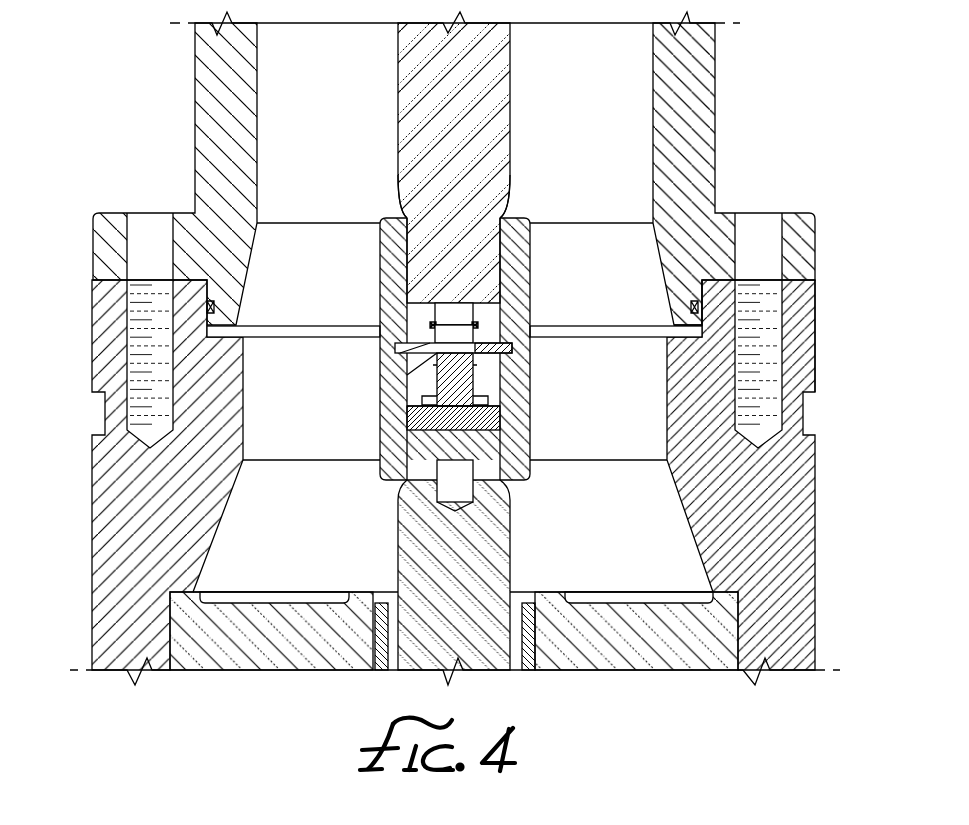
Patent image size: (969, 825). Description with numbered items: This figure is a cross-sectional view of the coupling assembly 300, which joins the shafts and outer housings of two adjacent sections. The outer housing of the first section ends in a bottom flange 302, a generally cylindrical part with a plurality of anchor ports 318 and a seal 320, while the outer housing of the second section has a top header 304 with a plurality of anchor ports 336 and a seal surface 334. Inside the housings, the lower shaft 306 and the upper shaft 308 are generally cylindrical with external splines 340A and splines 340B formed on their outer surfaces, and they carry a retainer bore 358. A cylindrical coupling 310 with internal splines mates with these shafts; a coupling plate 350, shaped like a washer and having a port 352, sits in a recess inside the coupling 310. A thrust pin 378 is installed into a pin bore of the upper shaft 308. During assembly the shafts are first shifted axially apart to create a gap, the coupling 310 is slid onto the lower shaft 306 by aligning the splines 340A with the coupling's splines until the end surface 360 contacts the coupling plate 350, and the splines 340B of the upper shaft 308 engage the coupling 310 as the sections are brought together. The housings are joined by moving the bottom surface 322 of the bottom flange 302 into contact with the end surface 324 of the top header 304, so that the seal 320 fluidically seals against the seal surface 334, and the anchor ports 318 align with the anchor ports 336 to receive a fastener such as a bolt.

The coupling assembly 300 is at (460, 348).
The bottom flange 302 is at (218, 100).
The top header 304 is at (117, 508).
The lower shaft 306 is at (437, 128).
The upper shaft 308 is at (433, 543).
The coupling 310 is at (397, 263).
The anchor ports 318 is at (757, 236).
The seal 320 is at (703, 303).
The bottom surface 322 is at (800, 288).
The end surface 324 is at (712, 265).
The seal surface 334 is at (694, 307).
The anchor ports 336 is at (770, 362).
The splines 340A is at (398, 200).
The splines 340B is at (398, 502).
The coupling plate 350 is at (403, 351).
The port 352 is at (413, 357).
The retainer bore 358 is at (452, 314).
The end surface 360 is at (488, 354).
The thrust pin 378 is at (455, 383).